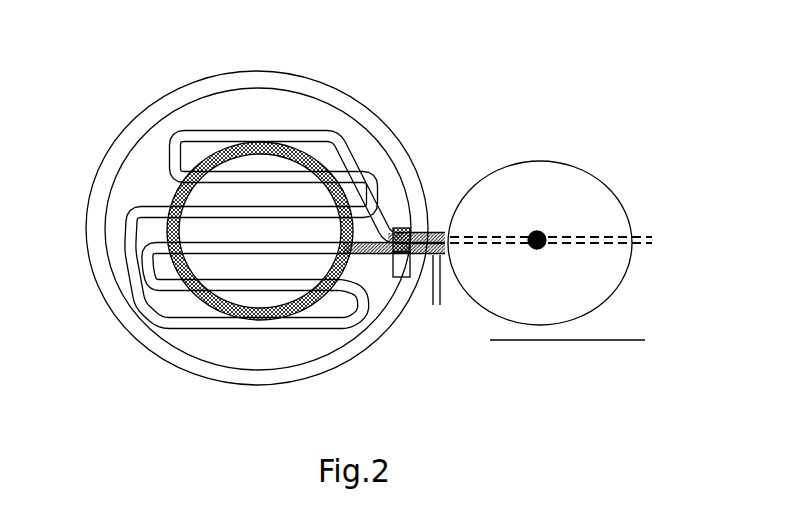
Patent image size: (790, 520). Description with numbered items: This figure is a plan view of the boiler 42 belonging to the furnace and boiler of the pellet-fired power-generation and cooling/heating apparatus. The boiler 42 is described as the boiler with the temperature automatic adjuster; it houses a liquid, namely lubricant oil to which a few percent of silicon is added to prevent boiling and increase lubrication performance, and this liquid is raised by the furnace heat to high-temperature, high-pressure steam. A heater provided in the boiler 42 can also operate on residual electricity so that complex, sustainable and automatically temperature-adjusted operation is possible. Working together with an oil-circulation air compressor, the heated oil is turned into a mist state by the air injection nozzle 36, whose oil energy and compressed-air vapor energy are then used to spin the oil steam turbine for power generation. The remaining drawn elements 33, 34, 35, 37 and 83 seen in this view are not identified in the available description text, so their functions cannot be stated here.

The pump 33 is at (493, 187).
The support frame 34 is at (440, 240).
The cooling coil pipe 35 is at (333, 143).
The air injection nozzle 36 is at (314, 218).
The valve 37 is at (402, 270).
The boiler 42 is at (237, 110).
The housing shell 83 is at (148, 112).